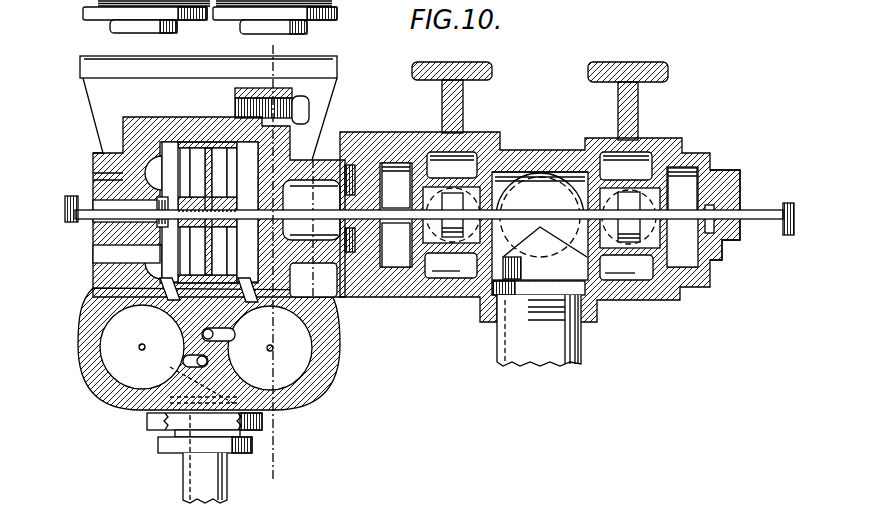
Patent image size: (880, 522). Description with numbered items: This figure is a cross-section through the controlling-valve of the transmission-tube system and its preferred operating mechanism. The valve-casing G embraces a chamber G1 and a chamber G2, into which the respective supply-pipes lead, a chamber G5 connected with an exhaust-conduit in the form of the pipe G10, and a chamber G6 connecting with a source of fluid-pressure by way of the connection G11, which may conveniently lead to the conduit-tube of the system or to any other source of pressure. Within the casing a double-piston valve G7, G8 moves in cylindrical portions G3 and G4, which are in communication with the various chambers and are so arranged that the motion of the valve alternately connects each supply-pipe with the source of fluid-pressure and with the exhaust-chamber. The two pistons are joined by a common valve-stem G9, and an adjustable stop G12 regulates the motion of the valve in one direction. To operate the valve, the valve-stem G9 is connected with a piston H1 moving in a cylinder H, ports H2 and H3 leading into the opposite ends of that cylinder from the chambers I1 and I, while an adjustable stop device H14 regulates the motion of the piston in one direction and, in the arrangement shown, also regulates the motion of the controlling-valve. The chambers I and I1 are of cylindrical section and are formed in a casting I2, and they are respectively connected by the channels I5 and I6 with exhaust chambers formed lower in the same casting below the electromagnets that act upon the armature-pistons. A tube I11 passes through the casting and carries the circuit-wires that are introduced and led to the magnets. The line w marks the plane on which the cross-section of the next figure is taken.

The adjustable stop device H14 is at (76, 241).
The piston H1 is at (172, 212).
The port H2 is at (184, 211).
The cylinder H is at (218, 171).
The port H3 is at (247, 212).
The common valve-stem G9 is at (327, 215).
The valve-casing G is at (540, 192).
The cylindrical portion G3 is at (414, 195).
The exhaust chamber G5 is at (539, 245).
The supply chamber G1 is at (452, 165).
The piston valve G7 is at (452, 215).
The pressure chamber G6 is at (544, 182).
The exhaust pipe G10 is at (557, 176).
The supply chamber G2 is at (626, 166).
The piston valve G8 is at (629, 217).
The cylindrical portion G4 is at (682, 190).
The adjustable stop G12 is at (724, 194).
The fluid-pressure conduit G11 is at (538, 323).
The casting I2 is at (316, 398).
The chamber I1 is at (142, 347).
The chamber I is at (270, 348).
The channel I6 is at (228, 339).
The channel I5 is at (182, 360).
The tube I11 is at (204, 458).
The section line w is at (261, 267).